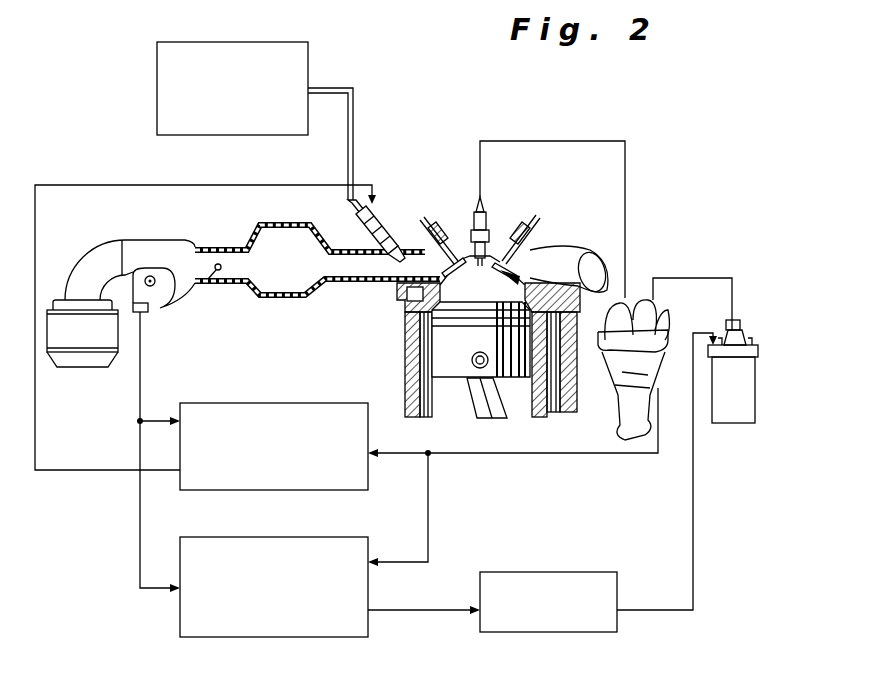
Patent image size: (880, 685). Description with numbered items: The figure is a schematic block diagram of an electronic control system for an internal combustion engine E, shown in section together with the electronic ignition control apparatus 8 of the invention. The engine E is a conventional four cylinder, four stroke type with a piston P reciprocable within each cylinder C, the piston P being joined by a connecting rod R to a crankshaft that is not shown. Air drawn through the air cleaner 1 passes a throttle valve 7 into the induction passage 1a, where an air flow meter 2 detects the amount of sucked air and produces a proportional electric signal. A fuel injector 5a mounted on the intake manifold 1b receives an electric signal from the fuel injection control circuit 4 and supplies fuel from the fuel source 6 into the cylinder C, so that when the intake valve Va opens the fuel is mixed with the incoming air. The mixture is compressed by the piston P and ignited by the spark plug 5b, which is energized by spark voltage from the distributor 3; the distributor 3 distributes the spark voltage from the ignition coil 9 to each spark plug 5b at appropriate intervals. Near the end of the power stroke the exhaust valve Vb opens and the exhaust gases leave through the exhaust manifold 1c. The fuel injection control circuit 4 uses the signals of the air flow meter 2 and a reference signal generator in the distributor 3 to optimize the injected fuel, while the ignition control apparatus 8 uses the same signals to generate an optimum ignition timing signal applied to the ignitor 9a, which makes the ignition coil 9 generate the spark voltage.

The air cleaner 1 is at (91, 363).
The induction passage 1a is at (214, 284).
The intake manifold 1b is at (380, 283).
The exhaust manifold 1c is at (598, 240).
The air flow meter 2 is at (166, 312).
The distributor 3 is at (660, 312).
The fuel injection control circuit 4 is at (295, 402).
The fuel injector 5a is at (380, 214).
The spark plug 5b is at (486, 218).
The fuel source 6 is at (310, 62).
The throttle valve 7 is at (228, 284).
The electronic ignition control apparatus 8 is at (288, 536).
The ignition coil 9 is at (740, 416).
The ignitor 9a is at (553, 571).
The cylinder C is at (404, 330).
The internal combustion engine E is at (403, 380).
The piston P is at (447, 380).
The connecting rod R is at (496, 420).
The intake valve Va is at (447, 261).
The exhaust valve Vb is at (515, 260).